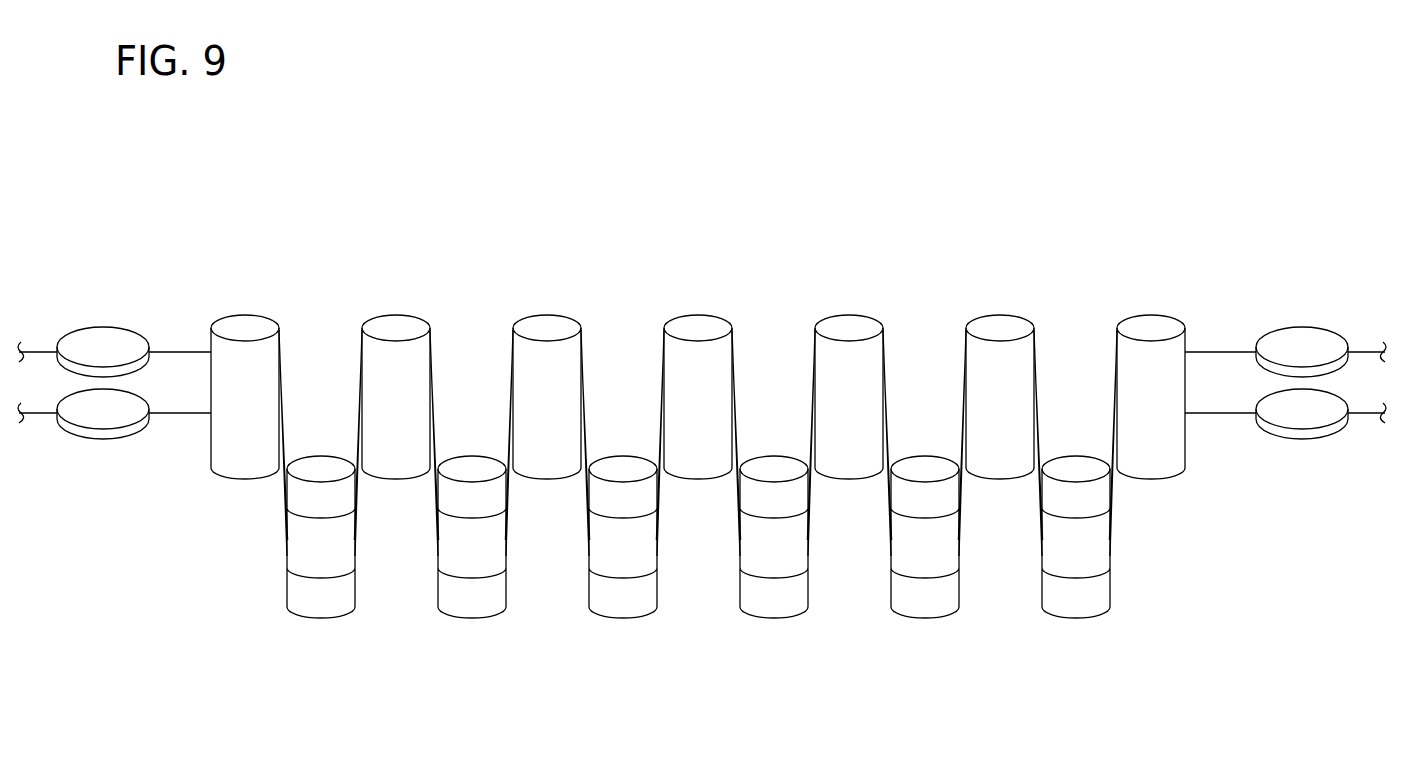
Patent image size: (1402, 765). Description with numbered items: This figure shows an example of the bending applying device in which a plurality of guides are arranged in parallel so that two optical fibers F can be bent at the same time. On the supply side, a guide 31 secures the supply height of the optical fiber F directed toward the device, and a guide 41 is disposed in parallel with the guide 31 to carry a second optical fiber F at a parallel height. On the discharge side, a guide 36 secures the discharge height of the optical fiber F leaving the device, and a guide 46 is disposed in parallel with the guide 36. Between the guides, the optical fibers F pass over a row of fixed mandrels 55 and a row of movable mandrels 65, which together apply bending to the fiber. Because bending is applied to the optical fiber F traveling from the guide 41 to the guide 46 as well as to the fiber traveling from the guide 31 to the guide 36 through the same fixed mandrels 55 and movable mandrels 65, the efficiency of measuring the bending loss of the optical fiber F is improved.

The optical fiber F is at (46, 350).
The guide 31 is at (106, 338).
The guide 41 is at (103, 420).
The guide 36 is at (1304, 338).
The guide 46 is at (1302, 420).
The fixed mandrels 55 is at (542, 328).
The movable mandrels 65 is at (627, 605).